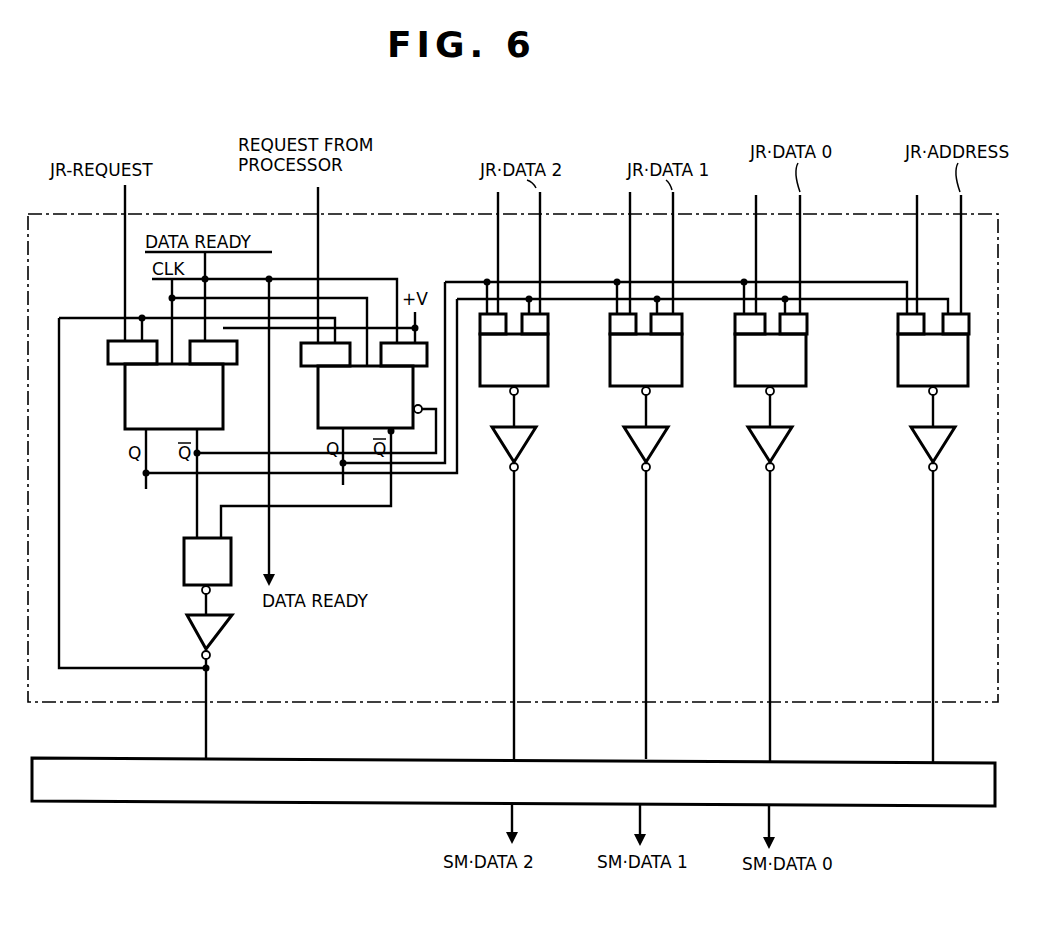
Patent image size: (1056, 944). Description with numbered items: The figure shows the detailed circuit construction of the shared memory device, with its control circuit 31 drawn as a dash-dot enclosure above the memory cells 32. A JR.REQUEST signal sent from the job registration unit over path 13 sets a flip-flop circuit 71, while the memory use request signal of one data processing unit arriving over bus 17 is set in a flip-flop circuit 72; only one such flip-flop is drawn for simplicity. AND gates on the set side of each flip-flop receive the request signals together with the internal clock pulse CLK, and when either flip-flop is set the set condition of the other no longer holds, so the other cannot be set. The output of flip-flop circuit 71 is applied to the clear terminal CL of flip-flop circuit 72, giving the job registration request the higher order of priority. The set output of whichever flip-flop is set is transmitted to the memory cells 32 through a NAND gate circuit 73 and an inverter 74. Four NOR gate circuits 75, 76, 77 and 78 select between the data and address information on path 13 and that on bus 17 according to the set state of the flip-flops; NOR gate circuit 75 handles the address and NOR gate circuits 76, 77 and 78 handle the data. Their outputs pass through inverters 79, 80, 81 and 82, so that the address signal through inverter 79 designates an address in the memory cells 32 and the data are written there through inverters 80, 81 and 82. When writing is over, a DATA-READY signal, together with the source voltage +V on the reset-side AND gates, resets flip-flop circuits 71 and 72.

The path 13 is at (126, 200).
The bus 17 is at (319, 200).
The control circuit 31 is at (1001, 291).
The memory cells 32 is at (995, 786).
The flip-flop circuit 71 is at (125, 414).
The flip-flop circuit 72 is at (320, 414).
The NAND gate circuit 73 is at (182, 570).
The inverter 74 is at (189, 634).
The NOR gate circuit 75 is at (898, 352).
The NOR gate circuit 76 is at (806, 370).
The NOR gate circuit 77 is at (682, 345).
The NOR gate circuit 78 is at (548, 370).
The inverter 79 is at (927, 450).
The inverter 80 is at (776, 450).
The inverter 81 is at (652, 450).
The inverter 82 is at (520, 450).